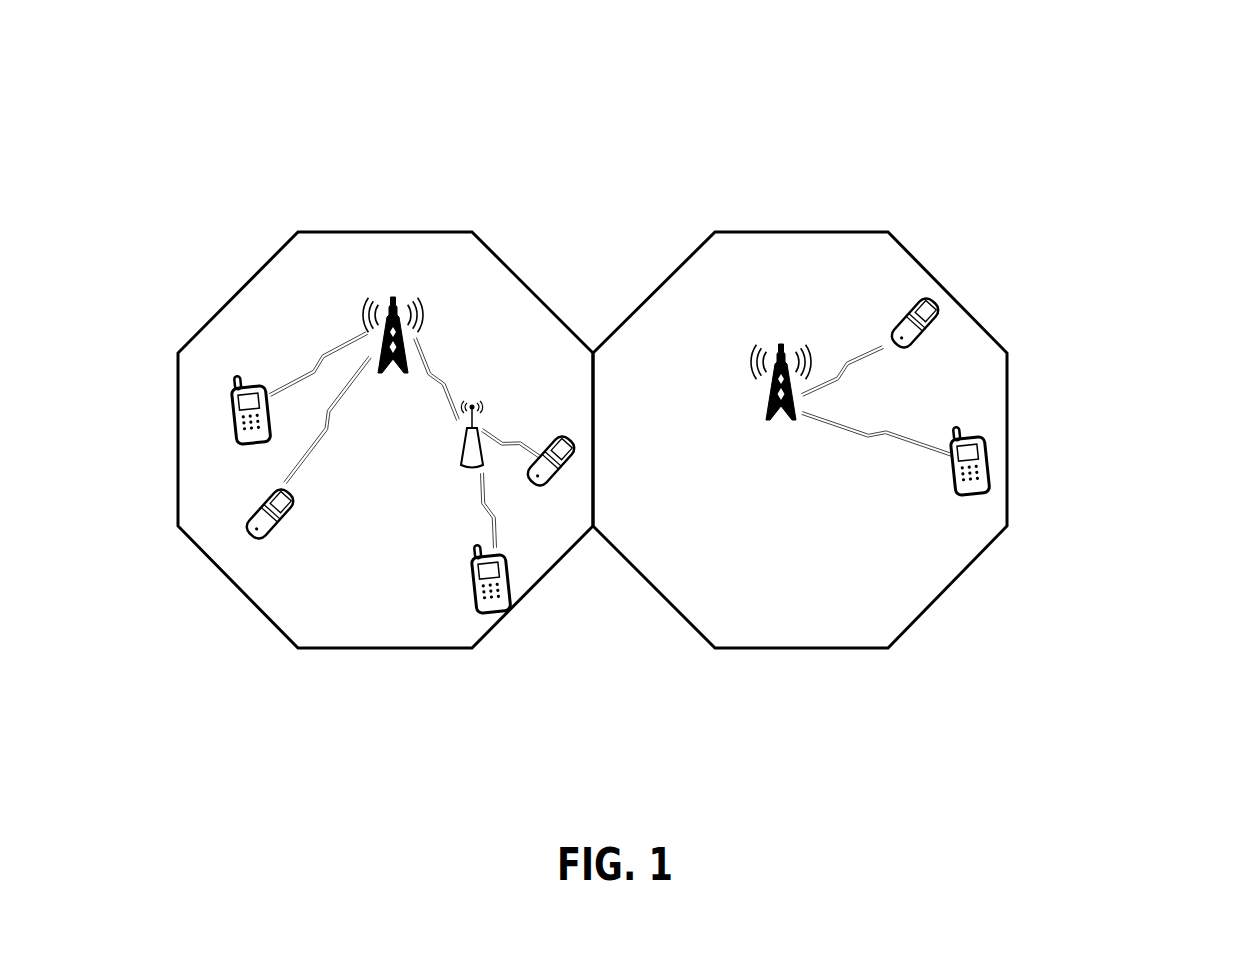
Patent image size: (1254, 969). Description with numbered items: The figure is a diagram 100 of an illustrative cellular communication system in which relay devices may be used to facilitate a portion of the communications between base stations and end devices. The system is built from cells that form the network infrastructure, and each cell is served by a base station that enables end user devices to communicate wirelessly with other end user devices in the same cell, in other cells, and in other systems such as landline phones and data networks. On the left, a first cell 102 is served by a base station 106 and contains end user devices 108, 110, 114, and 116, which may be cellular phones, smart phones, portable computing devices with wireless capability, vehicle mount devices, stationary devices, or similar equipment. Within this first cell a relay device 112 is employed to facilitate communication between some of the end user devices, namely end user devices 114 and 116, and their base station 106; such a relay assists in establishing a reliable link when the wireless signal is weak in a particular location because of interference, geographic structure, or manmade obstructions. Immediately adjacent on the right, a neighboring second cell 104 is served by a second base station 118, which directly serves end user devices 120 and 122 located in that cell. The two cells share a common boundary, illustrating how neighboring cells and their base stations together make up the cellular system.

The diagram 100 is at (1098, 99).
The first cell 102 is at (384, 516).
The second cell 104 is at (782, 569).
The base station 106 is at (368, 298).
The end user device 108 is at (215, 386).
The end user device 110 is at (242, 552).
The relay device 112 is at (484, 393).
The end user device 114 is at (577, 431).
The end user device 116 is at (469, 598).
The base station 118 is at (755, 338).
The end user device 120 is at (925, 292).
The end user device 122 is at (992, 443).